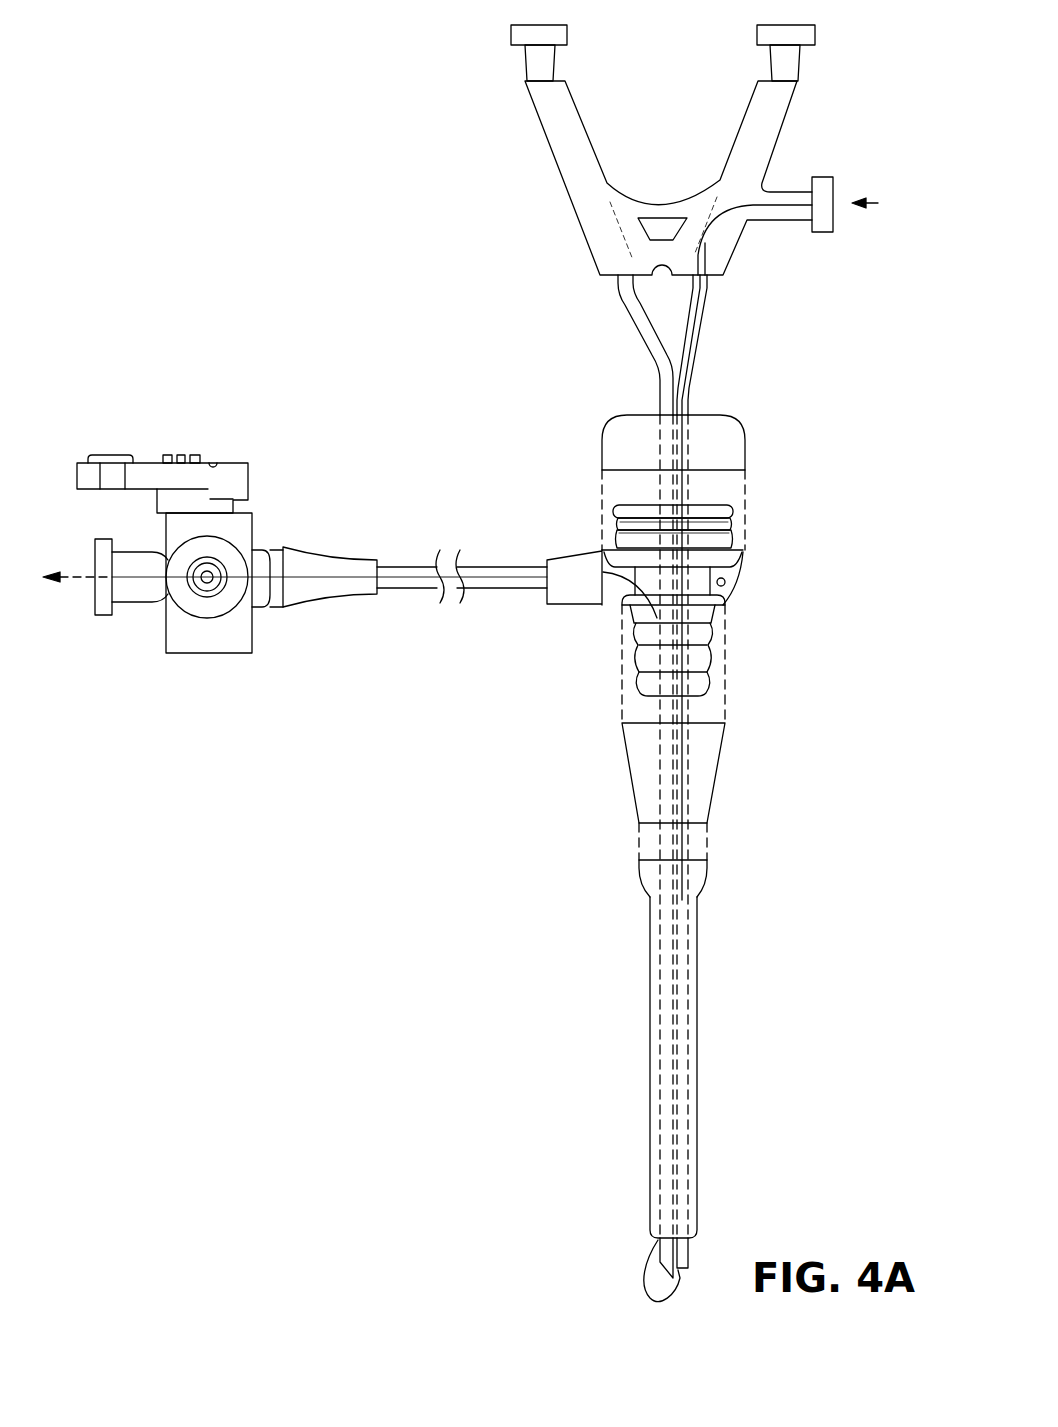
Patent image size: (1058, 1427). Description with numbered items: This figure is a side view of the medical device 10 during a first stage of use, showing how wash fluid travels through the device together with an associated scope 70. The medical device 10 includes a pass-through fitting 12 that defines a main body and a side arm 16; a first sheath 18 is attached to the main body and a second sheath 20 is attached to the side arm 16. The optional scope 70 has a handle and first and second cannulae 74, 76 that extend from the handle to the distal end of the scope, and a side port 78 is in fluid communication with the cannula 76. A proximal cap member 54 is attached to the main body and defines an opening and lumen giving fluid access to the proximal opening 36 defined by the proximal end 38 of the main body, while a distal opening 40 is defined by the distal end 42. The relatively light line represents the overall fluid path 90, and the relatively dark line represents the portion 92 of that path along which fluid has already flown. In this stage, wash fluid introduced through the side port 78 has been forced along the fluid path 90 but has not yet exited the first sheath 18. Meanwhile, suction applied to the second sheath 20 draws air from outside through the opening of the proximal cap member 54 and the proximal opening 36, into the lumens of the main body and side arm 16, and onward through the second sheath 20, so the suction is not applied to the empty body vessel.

The medical device 10 is at (463, 663).
The pass-through fitting 12 is at (730, 537).
The side arm 16 is at (577, 603).
The first sheath 18 is at (697, 1012).
The second sheath 20 is at (403, 588).
The proximal opening 36 is at (650, 503).
The proximal end 38 is at (696, 503).
The distal opening 40 is at (697, 693).
The distal end 42 is at (638, 697).
The proximal cap member 54 is at (745, 420).
The scope 70 is at (697, 150).
The first cannula 74 is at (618, 302).
The second cannula 76 is at (700, 322).
The side port 78 is at (822, 176).
The fluid path 90 is at (505, 578).
The portion of fluid path along which fluid has flown 92 is at (703, 246).